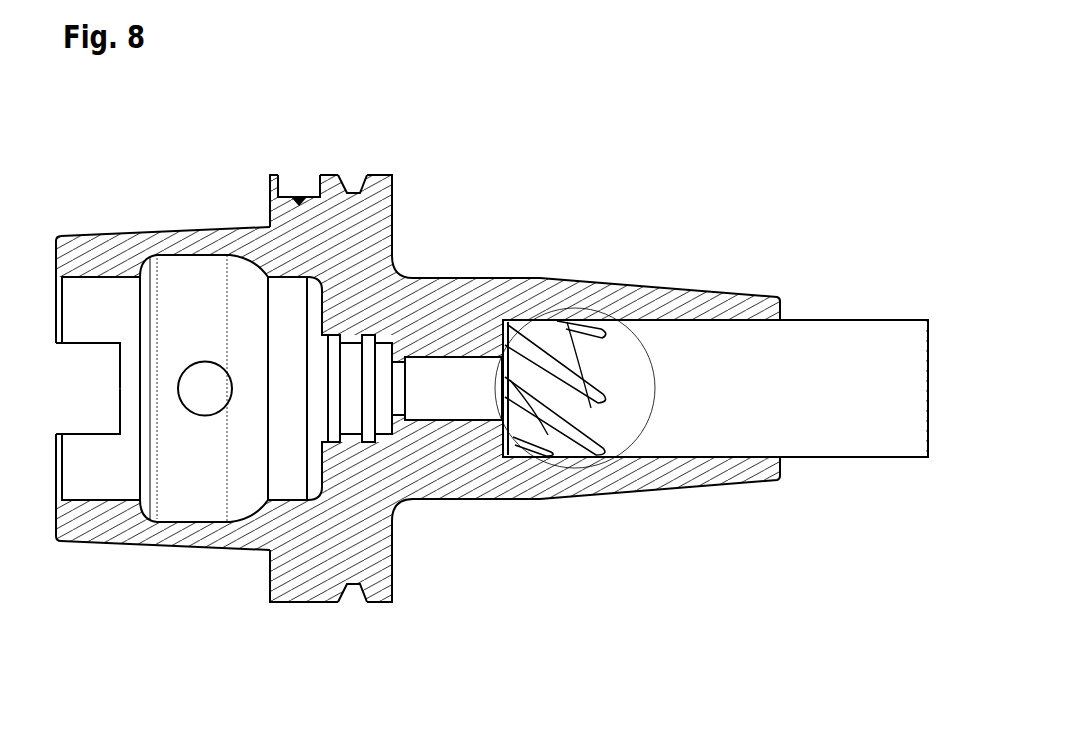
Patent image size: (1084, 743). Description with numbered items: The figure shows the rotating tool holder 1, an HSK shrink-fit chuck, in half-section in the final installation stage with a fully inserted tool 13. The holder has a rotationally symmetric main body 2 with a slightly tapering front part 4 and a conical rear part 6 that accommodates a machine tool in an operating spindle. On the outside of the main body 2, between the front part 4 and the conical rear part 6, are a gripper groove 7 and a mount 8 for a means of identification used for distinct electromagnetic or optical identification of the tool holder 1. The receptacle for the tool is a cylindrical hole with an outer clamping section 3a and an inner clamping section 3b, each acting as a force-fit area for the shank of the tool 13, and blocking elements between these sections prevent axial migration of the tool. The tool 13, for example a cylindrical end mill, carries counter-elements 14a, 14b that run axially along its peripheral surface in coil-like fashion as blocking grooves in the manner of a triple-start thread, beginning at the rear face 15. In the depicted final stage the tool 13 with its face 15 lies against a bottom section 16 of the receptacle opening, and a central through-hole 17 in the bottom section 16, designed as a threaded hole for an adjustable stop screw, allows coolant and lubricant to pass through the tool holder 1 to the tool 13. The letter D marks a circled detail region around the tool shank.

The tool holder 1 is at (703, 151).
The main body 2 is at (381, 582).
The outer clamping section 3a is at (688, 455).
The inner clamping section 3b is at (530, 437).
The front part 4 is at (604, 280).
The conical rear part 6 is at (185, 229).
The gripper groove 7 is at (352, 185).
The mount 8 is at (306, 190).
The tool 13 is at (846, 320).
The counter-element 14a is at (565, 323).
The counter-element 14b is at (578, 425).
The rear face 15 is at (500, 395).
The bottom section 16 is at (500, 335).
The central through-hole 17 is at (458, 370).
The diameter D is at (605, 315).